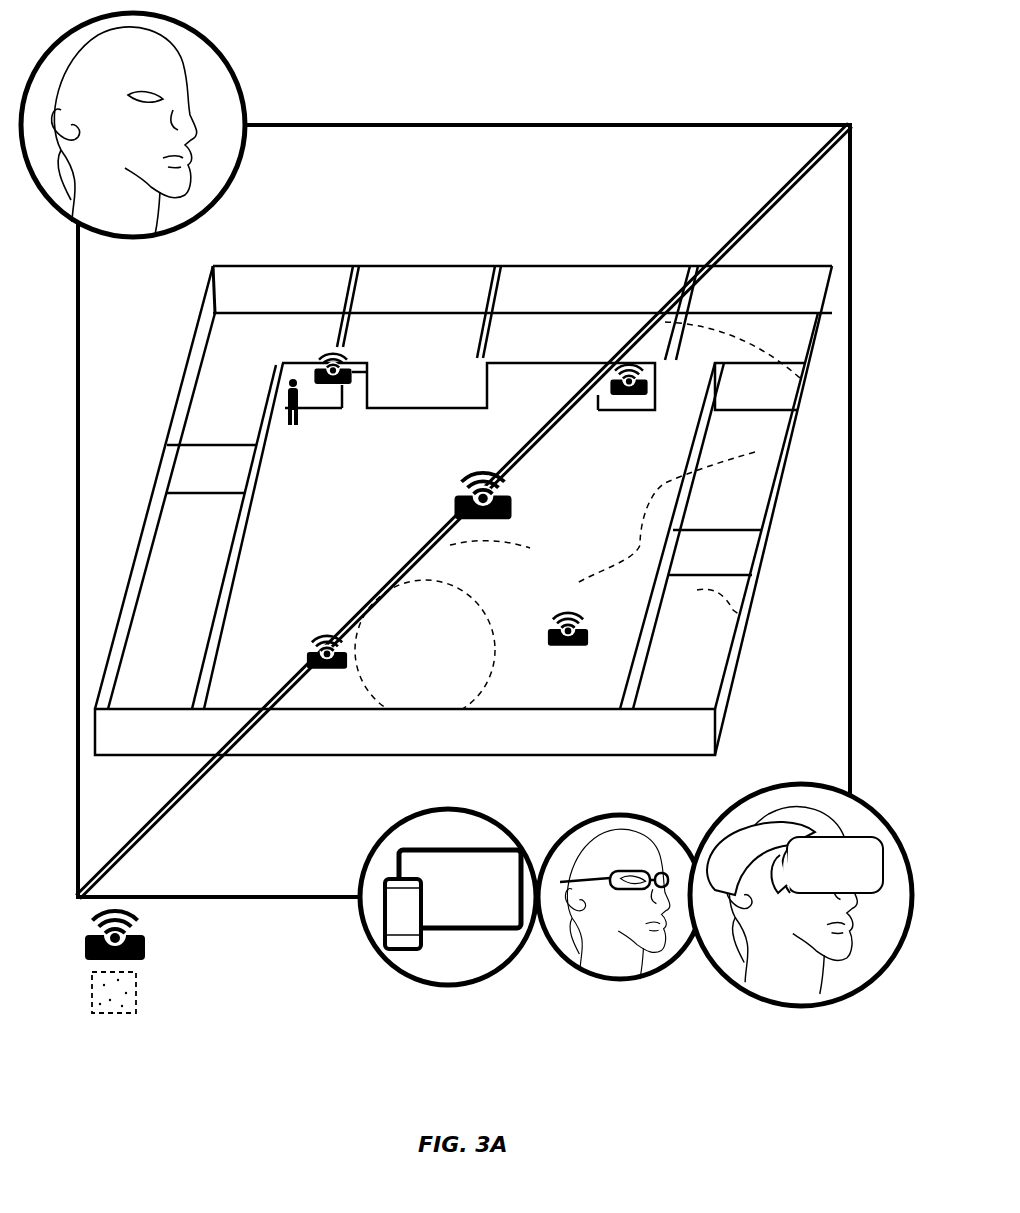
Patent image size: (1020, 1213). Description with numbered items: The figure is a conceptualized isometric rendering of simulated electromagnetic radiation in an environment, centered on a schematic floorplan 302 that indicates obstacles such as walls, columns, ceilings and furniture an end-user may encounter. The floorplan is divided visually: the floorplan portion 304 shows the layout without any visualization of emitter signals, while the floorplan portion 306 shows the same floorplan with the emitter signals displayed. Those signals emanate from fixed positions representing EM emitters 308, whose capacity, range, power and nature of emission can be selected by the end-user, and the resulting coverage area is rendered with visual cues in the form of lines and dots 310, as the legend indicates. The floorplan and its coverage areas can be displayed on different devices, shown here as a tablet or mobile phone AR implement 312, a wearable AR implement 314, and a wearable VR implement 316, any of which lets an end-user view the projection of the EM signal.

The floorplan 302 is at (343, 256).
The floorplan portion 304 is at (402, 555).
The floorplan portion 306 is at (405, 732).
The EM emitters 308 is at (118, 935).
The lines and dots 310 is at (130, 994).
The tablet or mobile phone AR implement 312 is at (448, 934).
The wearable AR implement 314 is at (620, 937).
The wearable VR implement 316 is at (801, 921).